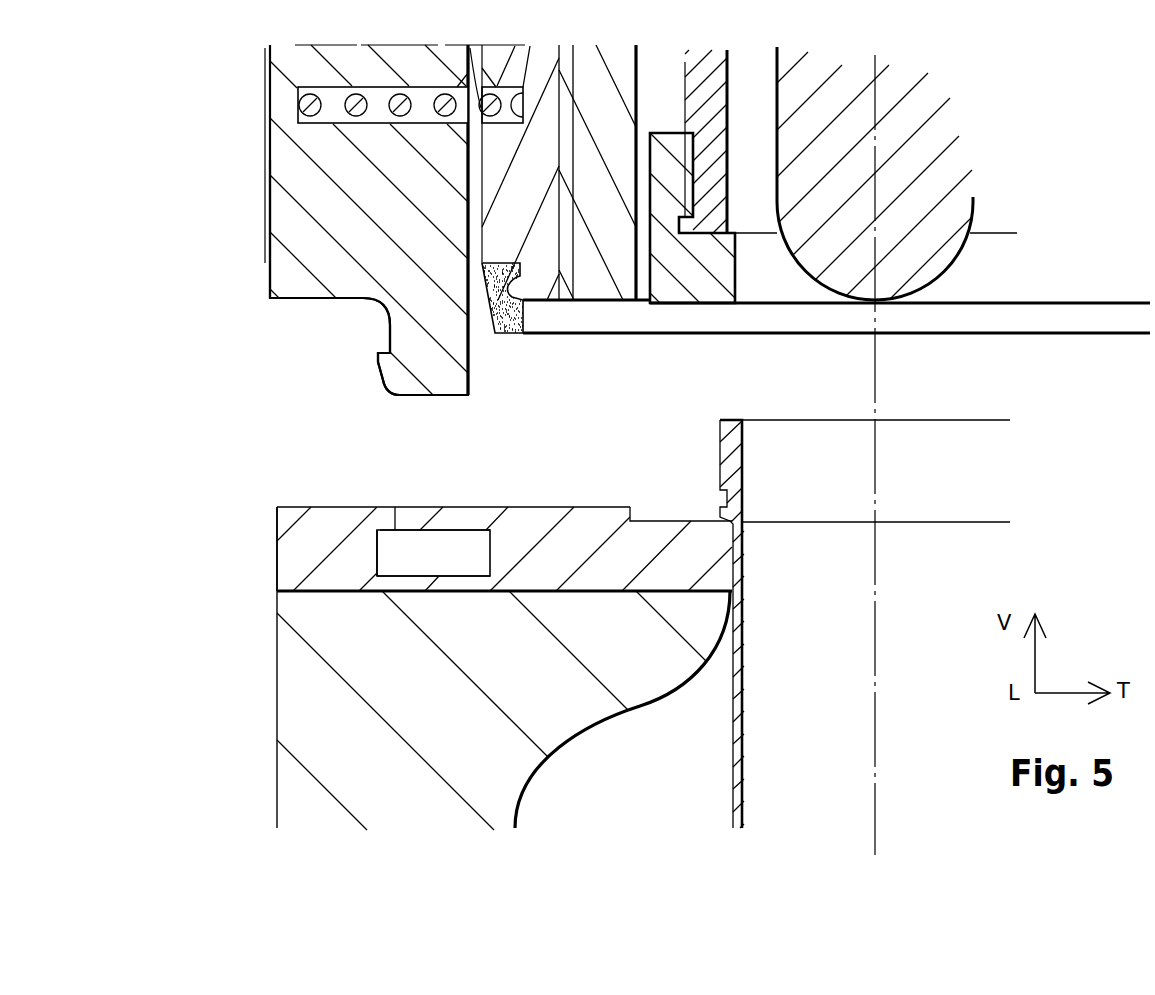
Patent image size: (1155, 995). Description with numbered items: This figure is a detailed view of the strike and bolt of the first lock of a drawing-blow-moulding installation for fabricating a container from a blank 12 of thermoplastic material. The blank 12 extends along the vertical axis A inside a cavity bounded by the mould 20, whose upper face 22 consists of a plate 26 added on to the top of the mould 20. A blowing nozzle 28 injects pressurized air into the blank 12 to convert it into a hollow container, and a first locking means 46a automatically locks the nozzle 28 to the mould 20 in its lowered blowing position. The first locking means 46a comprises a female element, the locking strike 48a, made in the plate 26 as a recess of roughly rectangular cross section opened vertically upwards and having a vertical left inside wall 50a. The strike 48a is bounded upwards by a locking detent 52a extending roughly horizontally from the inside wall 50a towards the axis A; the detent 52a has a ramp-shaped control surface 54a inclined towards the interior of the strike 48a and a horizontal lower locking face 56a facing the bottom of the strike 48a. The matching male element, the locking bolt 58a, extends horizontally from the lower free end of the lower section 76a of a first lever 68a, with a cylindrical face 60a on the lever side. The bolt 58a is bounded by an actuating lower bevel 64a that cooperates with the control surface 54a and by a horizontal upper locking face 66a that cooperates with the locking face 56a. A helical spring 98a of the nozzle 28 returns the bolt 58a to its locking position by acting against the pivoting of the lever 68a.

The blank 12 is at (723, 385).
The mould 20 is at (235, 682).
The upper face 22 is at (300, 505).
The plate 26 is at (240, 532).
The blowing nozzle 28 is at (205, 97).
The first locking means 46a is at (222, 338).
The locking strike 48a is at (435, 516).
The vertical left inside wall 50a is at (382, 566).
The locking detent 52a is at (388, 527).
The control surface 54a is at (395, 522).
The lower locking face 56a is at (383, 533).
The locking bolt 58a is at (333, 385).
The cylindrical face 60a is at (388, 340).
The lower bevel 64a is at (380, 392).
The upper locking face 66a is at (380, 353).
The first lever 68a is at (220, 197).
The lower section 76a is at (290, 233).
The helical spring 98a is at (320, 137).
The vertical axis A is at (874, 380).